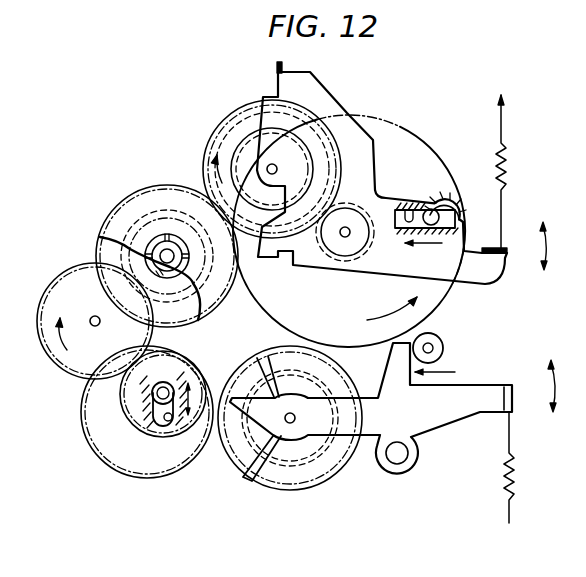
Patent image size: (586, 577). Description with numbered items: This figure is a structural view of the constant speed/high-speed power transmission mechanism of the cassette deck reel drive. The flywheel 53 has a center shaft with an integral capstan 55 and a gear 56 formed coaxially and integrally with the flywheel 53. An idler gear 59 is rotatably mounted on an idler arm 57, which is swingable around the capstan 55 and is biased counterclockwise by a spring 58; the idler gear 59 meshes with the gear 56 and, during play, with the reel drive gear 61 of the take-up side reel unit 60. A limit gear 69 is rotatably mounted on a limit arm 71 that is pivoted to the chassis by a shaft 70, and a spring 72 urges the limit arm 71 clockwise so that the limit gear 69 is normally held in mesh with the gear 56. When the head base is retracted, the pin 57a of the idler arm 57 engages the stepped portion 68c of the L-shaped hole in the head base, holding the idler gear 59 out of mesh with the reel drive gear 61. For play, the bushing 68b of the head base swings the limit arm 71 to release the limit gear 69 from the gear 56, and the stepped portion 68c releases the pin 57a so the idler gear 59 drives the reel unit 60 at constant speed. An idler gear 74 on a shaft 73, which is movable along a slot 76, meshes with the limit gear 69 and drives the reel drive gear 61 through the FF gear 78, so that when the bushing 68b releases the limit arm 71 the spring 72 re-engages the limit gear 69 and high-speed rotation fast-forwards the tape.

The flywheel 53 is at (410, 132).
The capstan 55 is at (350, 233).
The gear 56 is at (337, 261).
The idler arm 57 is at (326, 100).
The pin 57a is at (420, 212).
The spring 58 is at (505, 165).
The idler gear 59 is at (232, 112).
The reel unit 60 is at (113, 207).
The reel drive gear 61 is at (156, 186).
The bushing 68b is at (440, 340).
The stepped portion 68c is at (408, 210).
The limit gear 69 is at (320, 484).
The shaft 70 is at (397, 462).
The limit arm 71 is at (438, 418).
The spring 72 is at (512, 484).
The shaft 73 is at (152, 392).
The idler gear 74 is at (137, 478).
The slot 76 is at (165, 424).
The FF gear 78 is at (57, 277).